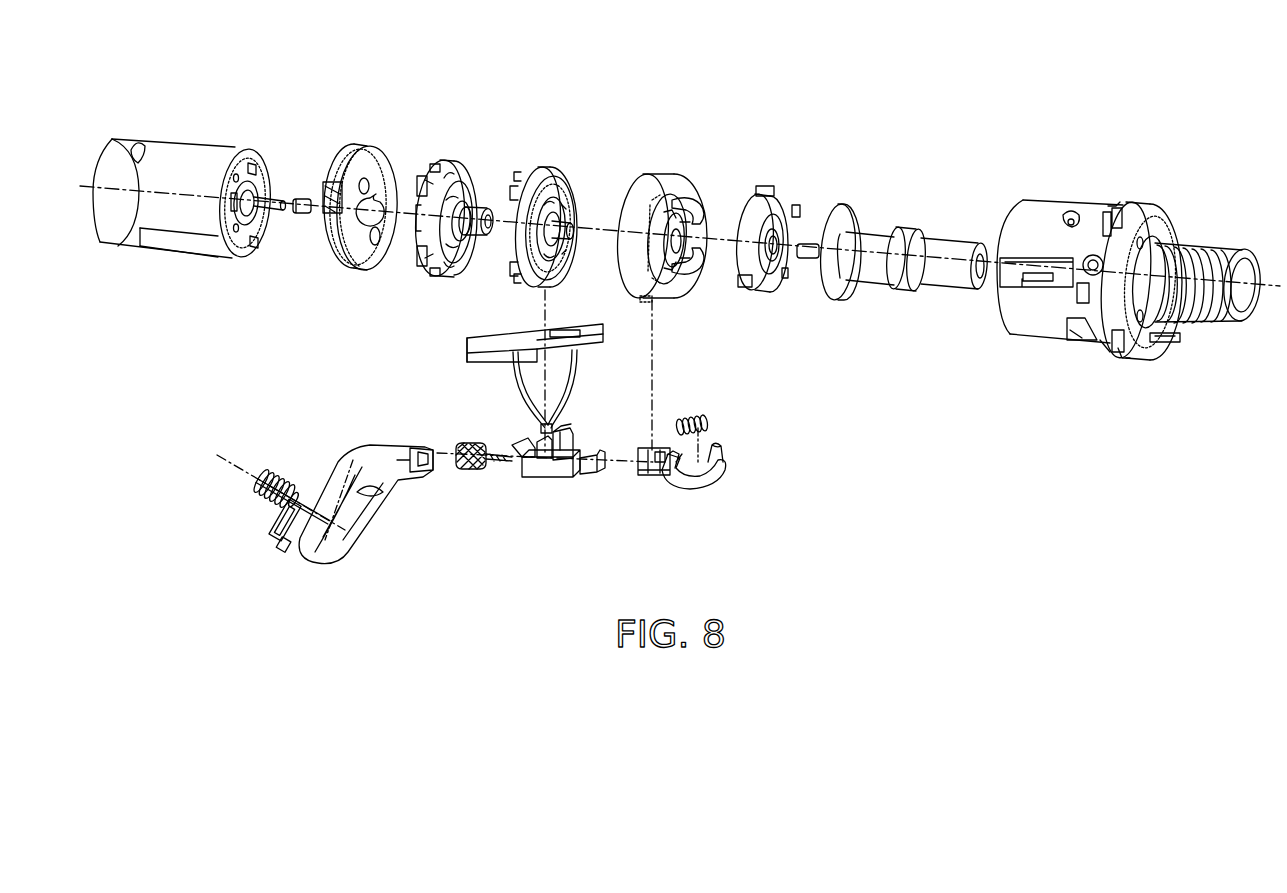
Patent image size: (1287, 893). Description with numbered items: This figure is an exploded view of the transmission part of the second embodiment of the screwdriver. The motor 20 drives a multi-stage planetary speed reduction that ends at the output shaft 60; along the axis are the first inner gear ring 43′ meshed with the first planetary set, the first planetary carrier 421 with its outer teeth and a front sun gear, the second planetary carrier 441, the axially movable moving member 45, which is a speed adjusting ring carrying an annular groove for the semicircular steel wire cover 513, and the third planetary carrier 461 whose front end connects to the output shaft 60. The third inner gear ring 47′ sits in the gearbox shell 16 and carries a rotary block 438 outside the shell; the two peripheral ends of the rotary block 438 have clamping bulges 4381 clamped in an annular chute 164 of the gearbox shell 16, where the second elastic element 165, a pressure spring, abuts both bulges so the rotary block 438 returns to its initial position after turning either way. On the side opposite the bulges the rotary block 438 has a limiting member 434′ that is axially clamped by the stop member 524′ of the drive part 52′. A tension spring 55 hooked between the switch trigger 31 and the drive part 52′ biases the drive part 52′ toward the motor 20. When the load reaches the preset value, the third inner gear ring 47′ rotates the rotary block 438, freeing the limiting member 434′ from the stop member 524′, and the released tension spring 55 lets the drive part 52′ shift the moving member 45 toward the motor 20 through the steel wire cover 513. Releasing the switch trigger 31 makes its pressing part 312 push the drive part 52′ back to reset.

The motor 20 is at (197, 160).
The first inner gear ring 43′ is at (462, 158).
The first planetary carrier 421 is at (475, 187).
The moving member 45 is at (556, 168).
The second planetary carrier 441 is at (577, 185).
The third inner gear ring 47′ is at (637, 195).
The third planetary carrier 461 is at (680, 188).
The output shaft 60 is at (940, 247).
The gearbox shell 16 is at (1100, 210).
The annular chute 164 is at (1123, 353).
The steel wire cover 513 is at (517, 382).
The second elastic element 165 is at (708, 420).
The clamping bulges 4381 is at (722, 450).
The switch trigger 31 is at (342, 527).
The pressing part 312 is at (420, 470).
The tension spring 55 is at (470, 472).
The drive part 52′ is at (540, 467).
The stop member 524′ is at (585, 478).
The limiting member 434′ is at (647, 473).
The rotary block 438 is at (673, 484).